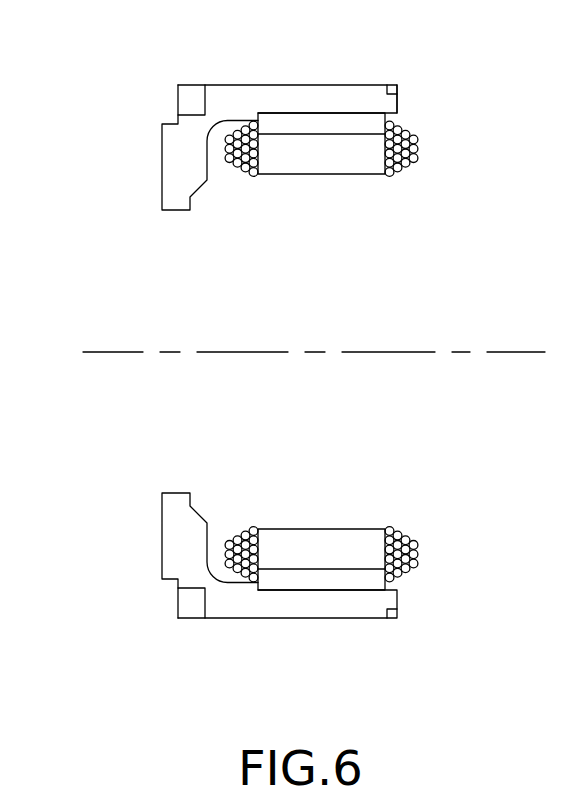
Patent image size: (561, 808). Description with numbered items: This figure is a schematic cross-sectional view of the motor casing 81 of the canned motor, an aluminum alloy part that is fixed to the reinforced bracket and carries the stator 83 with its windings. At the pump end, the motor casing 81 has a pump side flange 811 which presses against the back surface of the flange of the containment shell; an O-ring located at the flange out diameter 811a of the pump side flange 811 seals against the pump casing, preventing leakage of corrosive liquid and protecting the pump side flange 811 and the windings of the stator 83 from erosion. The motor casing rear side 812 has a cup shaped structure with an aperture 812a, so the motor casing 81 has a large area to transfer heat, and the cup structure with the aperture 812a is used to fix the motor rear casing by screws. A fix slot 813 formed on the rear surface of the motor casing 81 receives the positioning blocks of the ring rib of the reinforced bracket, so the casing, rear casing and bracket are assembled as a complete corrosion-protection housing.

The motor casing 81 is at (247, 98).
The pump side flange 811 is at (397, 97).
The flange out diameter 811a is at (397, 88).
The motor casing rear side 812 is at (175, 170).
The aperture 812a is at (177, 285).
The fix slot 813 is at (190, 95).
The stator 83 is at (310, 158).